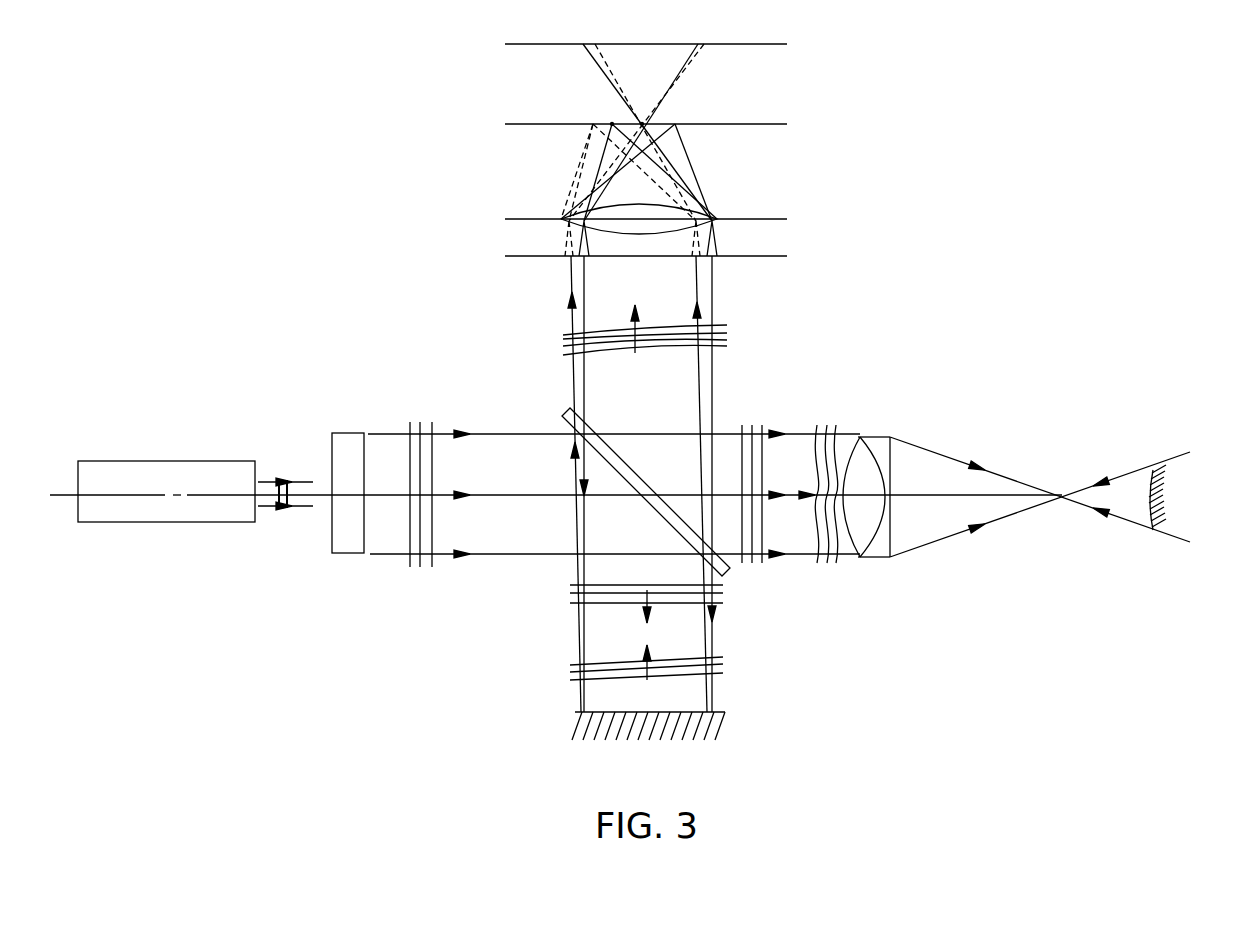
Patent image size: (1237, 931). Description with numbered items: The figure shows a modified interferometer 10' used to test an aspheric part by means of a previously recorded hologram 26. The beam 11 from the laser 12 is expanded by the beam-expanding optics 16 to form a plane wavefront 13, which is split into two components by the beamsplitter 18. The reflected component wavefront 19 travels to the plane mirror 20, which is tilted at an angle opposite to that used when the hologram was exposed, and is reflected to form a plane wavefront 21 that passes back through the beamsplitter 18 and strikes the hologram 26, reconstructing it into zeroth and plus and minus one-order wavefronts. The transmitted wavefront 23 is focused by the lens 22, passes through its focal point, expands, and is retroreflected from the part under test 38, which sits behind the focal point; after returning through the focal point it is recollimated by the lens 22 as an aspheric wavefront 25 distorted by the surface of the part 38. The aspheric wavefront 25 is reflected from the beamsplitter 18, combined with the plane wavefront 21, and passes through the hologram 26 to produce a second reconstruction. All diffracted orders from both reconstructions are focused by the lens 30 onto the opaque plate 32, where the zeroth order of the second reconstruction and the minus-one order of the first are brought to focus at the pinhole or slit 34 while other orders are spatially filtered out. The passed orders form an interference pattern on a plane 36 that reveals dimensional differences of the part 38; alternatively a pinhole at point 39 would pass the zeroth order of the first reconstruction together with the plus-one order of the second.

The modified interferometer 10' is at (903, 321).
The beam 11 is at (287, 491).
The laser 12 is at (162, 461).
The plane wavefront 13 is at (410, 458).
The beam-expanding optics 16 is at (348, 433).
The beamsplitter 18 is at (631, 469).
The reflected component wavefront 19 is at (623, 585).
The plane mirror 20 is at (642, 712).
The plane wavefront 21 is at (643, 353).
The lens 22 is at (877, 437).
The transmitted wavefront 23 is at (763, 457).
The aspheric wavefront 25 is at (650, 328).
The hologram 26 is at (743, 257).
The lens 30 is at (646, 232).
The opaque plate 32 is at (770, 124).
The pinhole or slit 34 is at (647, 122).
The plane 36 is at (762, 44).
The part under test 38 is at (1152, 500).
The point 39 is at (611, 124).